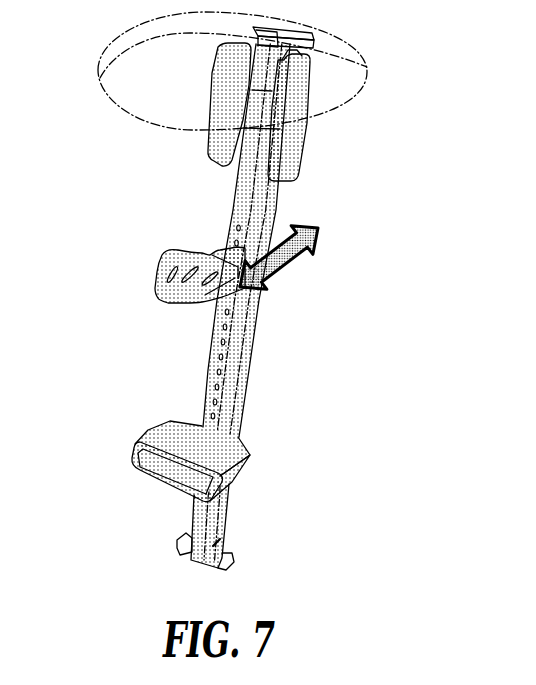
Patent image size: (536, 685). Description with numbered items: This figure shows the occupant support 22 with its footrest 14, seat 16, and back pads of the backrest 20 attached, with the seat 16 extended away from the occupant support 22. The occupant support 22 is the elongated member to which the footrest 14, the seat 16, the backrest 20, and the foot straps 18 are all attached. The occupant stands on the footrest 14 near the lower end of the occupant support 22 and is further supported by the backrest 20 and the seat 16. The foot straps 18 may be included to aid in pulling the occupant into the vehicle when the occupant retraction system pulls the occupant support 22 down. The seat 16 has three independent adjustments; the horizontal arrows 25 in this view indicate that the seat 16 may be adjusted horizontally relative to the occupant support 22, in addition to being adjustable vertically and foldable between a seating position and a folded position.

The footrest 14 is at (232, 450).
The seat 16 is at (237, 310).
The foot straps 18 is at (140, 440).
The backrest 20 is at (310, 102).
The occupant support 22 is at (250, 187).
The horizontal arrows 25 is at (297, 263).